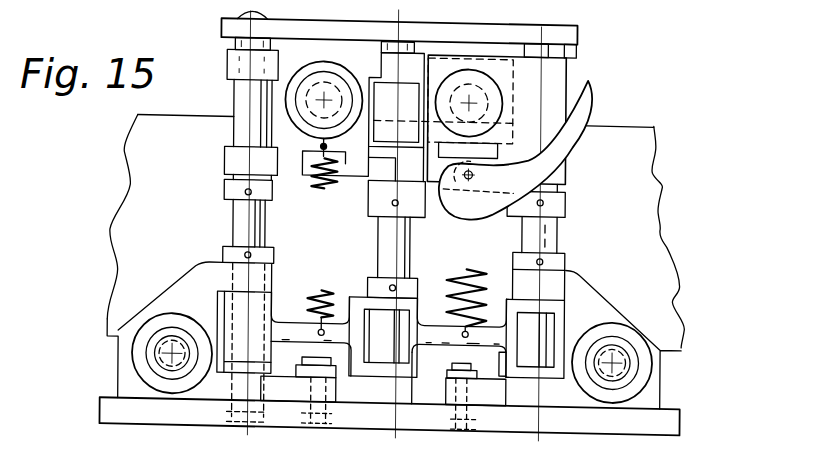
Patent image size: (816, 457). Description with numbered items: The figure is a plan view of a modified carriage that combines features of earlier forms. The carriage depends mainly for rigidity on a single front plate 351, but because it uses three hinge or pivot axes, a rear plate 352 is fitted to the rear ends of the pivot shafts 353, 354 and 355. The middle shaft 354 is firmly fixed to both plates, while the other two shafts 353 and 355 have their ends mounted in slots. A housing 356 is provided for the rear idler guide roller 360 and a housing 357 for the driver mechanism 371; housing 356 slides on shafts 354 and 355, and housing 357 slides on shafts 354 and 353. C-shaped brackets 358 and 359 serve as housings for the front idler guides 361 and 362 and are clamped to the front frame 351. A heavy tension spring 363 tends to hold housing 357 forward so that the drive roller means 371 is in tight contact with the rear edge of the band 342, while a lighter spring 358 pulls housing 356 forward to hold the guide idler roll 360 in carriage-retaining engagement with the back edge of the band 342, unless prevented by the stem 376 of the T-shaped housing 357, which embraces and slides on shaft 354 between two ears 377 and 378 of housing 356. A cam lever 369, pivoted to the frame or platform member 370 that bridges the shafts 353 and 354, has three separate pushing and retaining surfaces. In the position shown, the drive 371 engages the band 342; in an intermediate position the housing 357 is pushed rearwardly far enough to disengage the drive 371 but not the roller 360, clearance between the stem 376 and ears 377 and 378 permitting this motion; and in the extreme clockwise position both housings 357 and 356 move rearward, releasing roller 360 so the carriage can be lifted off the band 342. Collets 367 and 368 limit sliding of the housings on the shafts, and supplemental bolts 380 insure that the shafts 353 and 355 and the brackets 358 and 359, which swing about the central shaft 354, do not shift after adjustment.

The band 342 is at (630, 126).
The front plate 351 is at (680, 410).
The rear plate 352 is at (582, 33).
The pivot shaft 353 is at (554, 237).
The pivot shaft 354 is at (387, 240).
The pivot shaft 355 is at (234, 219).
The housing 356 is at (336, 191).
The housing 357 is at (563, 72).
The C-shaped bracket / lighter spring 358 is at (308, 296).
The C-shaped bracket 359 is at (165, 289).
The rear idler guide roller 360 is at (343, 72).
The front idler guide 361 is at (648, 374).
The front idler guide 362 is at (183, 324).
The heavy tension spring 363 is at (480, 274).
The collet 367 is at (223, 252).
The collet 368 is at (226, 192).
The cam lever 369 is at (578, 143).
The frame or platform member 370 is at (519, 210).
The driver mechanism 371 is at (481, 89).
The stem 376 is at (389, 138).
The ear 377 is at (378, 185).
The ear 378 is at (408, 57).
The supplemental bolt 380 is at (338, 404).